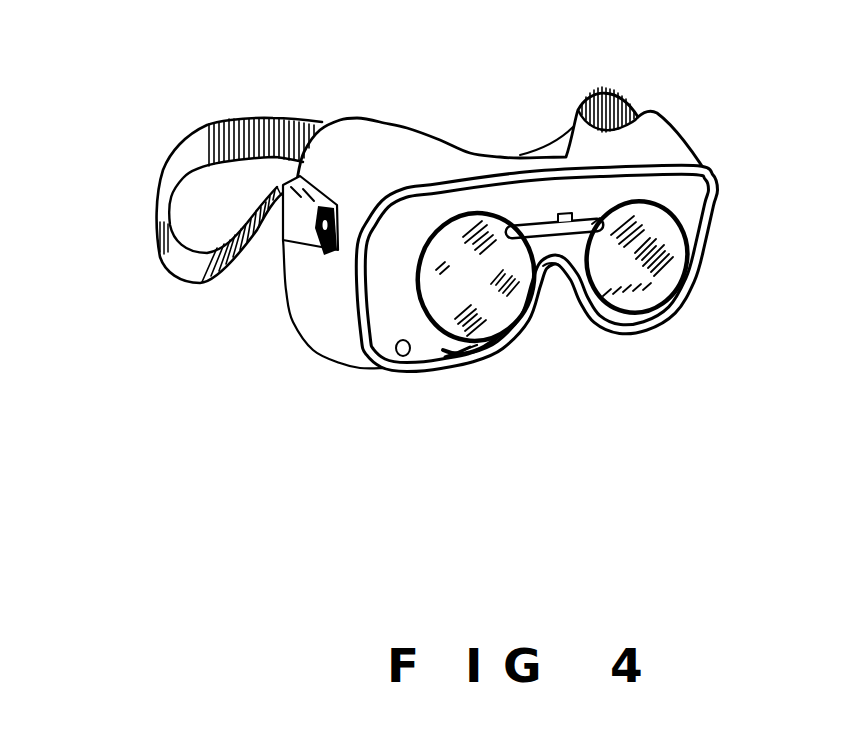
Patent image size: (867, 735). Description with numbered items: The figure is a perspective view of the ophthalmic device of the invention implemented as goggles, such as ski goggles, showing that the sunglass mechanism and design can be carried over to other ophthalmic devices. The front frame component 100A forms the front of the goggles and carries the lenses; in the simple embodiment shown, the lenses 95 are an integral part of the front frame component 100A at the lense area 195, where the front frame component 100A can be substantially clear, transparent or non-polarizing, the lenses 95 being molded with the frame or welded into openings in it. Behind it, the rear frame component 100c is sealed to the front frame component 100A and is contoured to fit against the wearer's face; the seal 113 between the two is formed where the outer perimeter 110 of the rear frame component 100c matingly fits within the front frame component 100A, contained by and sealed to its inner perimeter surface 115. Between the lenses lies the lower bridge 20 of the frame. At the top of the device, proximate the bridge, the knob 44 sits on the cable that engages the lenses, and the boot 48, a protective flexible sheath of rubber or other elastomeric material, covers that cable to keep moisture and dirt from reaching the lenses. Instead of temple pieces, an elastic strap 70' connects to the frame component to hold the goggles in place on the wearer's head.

The elastic strap 70' is at (192, 200).
The rear frame component 100c is at (398, 142).
The front frame component 100A is at (390, 285).
The knob 44 is at (560, 214).
The lense area 195 is at (640, 298).
The lenses 95 is at (335, 364).
The outer perimeter 110 is at (450, 300).
The inner perimeter surface 115 is at (397, 356).
The seal 113 is at (460, 356).
The lower bridge 20 is at (553, 266).
The boot 48 is at (597, 222).